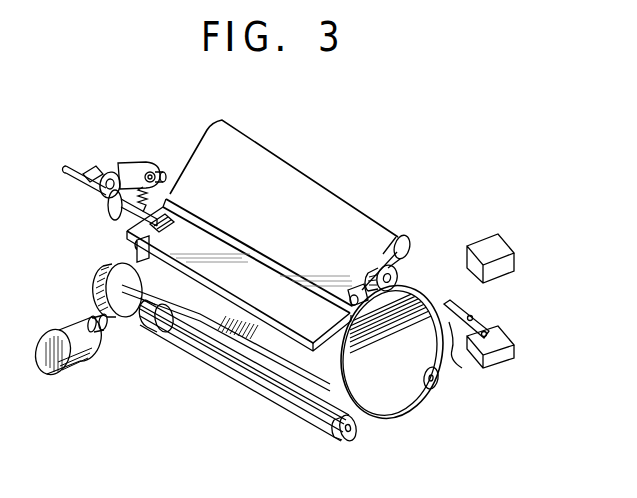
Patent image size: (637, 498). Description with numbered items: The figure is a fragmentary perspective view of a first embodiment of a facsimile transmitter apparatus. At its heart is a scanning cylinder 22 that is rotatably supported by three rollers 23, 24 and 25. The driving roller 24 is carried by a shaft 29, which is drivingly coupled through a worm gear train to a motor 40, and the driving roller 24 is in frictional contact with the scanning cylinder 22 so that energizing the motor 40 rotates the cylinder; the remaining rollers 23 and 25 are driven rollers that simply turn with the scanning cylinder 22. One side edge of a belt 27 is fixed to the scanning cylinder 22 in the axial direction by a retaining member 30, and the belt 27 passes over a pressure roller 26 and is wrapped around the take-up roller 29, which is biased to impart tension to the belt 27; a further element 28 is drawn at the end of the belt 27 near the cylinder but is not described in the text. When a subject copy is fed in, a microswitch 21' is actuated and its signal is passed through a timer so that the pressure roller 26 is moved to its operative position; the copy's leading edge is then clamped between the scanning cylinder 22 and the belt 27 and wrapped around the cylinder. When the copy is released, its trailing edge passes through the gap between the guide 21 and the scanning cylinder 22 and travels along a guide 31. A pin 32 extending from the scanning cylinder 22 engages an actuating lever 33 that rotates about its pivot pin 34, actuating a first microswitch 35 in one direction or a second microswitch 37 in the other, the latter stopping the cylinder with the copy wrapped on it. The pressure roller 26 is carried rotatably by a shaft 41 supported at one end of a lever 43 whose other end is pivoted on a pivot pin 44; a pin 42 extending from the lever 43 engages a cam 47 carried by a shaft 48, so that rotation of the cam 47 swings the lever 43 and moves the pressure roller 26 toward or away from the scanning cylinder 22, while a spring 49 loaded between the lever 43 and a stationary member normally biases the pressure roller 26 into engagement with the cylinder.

The guide 21 is at (215, 279).
The microswitch 21' is at (104, 259).
The scanning cylinder 22 is at (381, 420).
The roller 23 is at (398, 274).
The driving roller 24 is at (349, 442).
The roller 25 is at (433, 390).
The pressure roller 26 is at (354, 290).
The belt 27 is at (260, 168).
The roller 28 is at (406, 240).
The shaft 29 is at (248, 372).
The retaining member 30 is at (383, 318).
The guide 31 is at (208, 308).
The pin 32 is at (462, 368).
The actuating lever 33 is at (489, 320).
The pivot pin 34 is at (472, 317).
The first microswitch 35 is at (508, 350).
The second microswitch 37 is at (515, 250).
The motor 40 is at (64, 372).
The shaft 41 is at (158, 171).
The pin 42 is at (137, 166).
The lever 43 is at (110, 173).
The pivot pin 44 is at (89, 171).
The cam 47 is at (108, 208).
The shaft 48 is at (66, 169).
The spring 49 is at (152, 193).